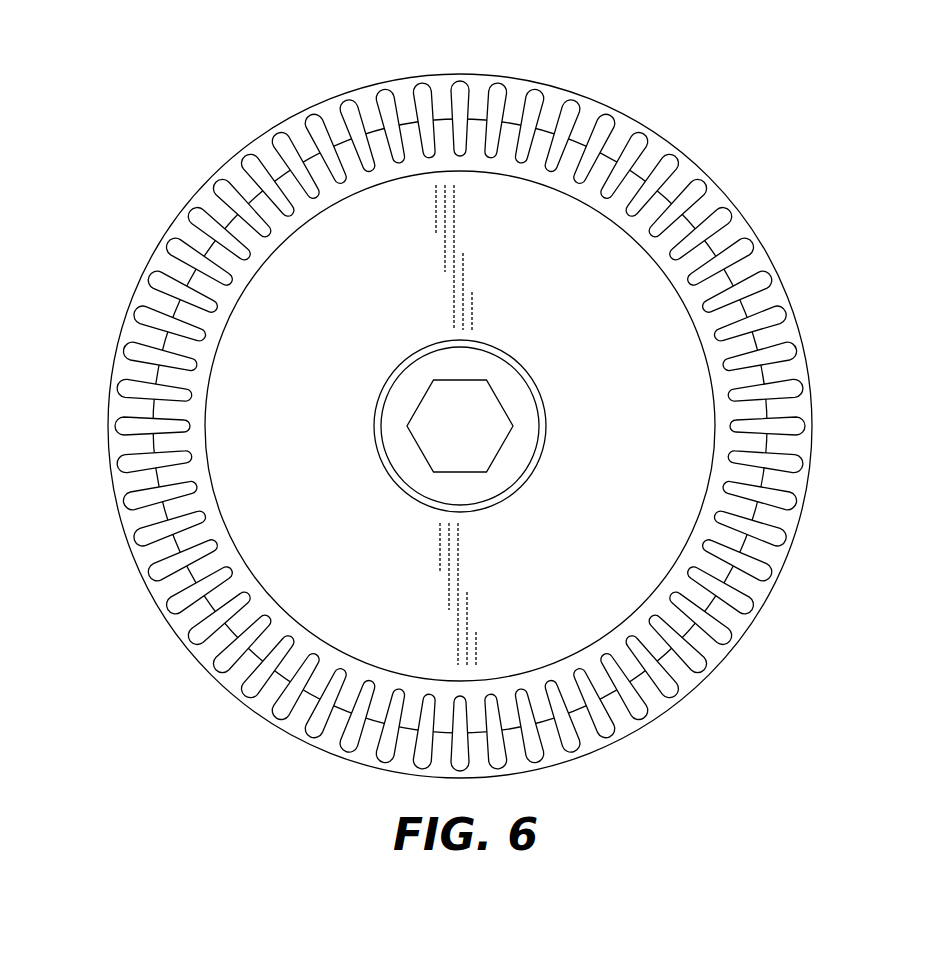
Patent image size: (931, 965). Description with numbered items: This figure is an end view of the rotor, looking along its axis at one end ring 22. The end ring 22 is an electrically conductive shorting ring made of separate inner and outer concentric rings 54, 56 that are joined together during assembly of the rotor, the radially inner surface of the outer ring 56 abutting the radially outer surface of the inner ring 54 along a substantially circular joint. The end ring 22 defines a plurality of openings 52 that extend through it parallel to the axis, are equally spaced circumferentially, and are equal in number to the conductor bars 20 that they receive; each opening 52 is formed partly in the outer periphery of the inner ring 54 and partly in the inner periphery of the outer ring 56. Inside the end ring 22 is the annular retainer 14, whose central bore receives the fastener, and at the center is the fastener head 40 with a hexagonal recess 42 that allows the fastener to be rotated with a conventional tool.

The end ring 22 is at (426, 415).
The conductor bar 20 is at (470, 395).
The opening 52 is at (532, 105).
The outer ring 56 is at (153, 155).
The inner ring 54 is at (268, 252).
The retainer 14 is at (460, 491).
The head 40 is at (494, 459).
The hexagonal recess 42 is at (488, 440).